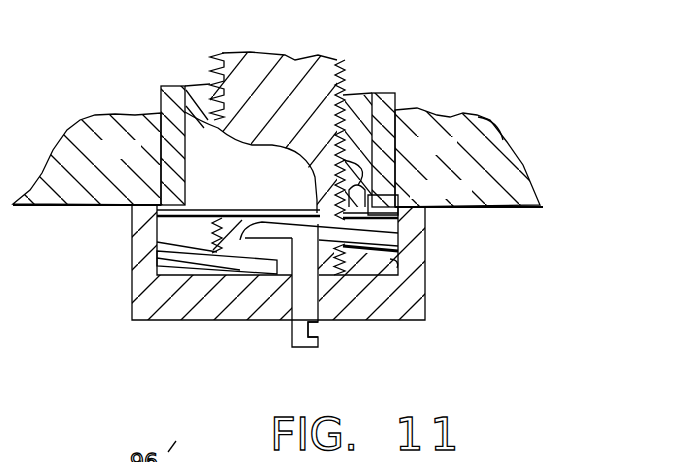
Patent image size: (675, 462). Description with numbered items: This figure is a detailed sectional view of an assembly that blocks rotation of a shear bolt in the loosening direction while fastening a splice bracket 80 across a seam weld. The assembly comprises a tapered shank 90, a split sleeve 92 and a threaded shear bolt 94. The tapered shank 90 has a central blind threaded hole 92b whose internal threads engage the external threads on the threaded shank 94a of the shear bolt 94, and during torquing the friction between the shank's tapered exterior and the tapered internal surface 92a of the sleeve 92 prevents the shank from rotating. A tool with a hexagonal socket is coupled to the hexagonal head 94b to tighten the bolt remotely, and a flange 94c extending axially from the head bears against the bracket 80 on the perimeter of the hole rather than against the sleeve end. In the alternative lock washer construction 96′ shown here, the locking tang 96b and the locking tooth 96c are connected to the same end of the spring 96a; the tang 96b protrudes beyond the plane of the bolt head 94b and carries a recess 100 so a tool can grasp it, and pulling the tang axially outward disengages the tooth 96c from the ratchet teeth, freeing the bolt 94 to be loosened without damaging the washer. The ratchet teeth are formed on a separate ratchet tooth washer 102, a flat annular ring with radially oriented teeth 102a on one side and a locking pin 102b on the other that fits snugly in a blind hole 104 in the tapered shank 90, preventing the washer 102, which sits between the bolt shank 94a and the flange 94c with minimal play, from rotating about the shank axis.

The splice bracket 80 is at (510, 198).
The tapered shank 90 is at (241, 181).
The split sleeve 92 is at (380, 96).
The tapered internal surface 92a is at (197, 85).
The central blind threaded hole 92b is at (161, 97).
The threaded shear bolt 94 is at (426, 298).
The threaded shank 94a is at (211, 72).
The hexagonal head 94b is at (163, 312).
The flange 94c is at (398, 270).
The lock washer construction 96′ is at (400, 240).
The spring 96a is at (357, 250).
The locking tang 96b is at (305, 348).
The locking tooth 96c is at (275, 222).
The recess 100 is at (313, 324).
The ratchet tooth washer 102 is at (170, 190).
The radially oriented teeth 102a is at (185, 216).
The locking pin 102b is at (397, 186).
The blind hole 104 is at (394, 143).